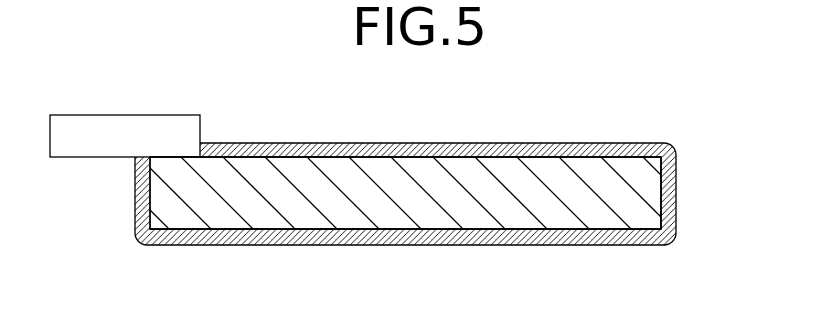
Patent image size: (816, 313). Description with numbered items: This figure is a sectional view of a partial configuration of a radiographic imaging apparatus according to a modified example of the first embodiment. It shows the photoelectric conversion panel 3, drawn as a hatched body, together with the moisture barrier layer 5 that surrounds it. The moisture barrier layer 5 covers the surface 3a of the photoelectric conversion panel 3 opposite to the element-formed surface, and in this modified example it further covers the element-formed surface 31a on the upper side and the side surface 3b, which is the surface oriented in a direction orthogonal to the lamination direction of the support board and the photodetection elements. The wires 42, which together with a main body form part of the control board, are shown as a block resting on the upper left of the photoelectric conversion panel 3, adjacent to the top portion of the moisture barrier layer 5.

The moisture barrier layer 5 is at (615, 148).
The photoelectric conversion panel 3 is at (185, 157).
The element-formed surface 31a is at (427, 158).
The surface of the photoelectric conversion panel opposite to the element-formed sur 3a is at (398, 229).
The side surface of the photoelectric conversion panel 3b is at (661, 183).
The wires 42 is at (90, 115).